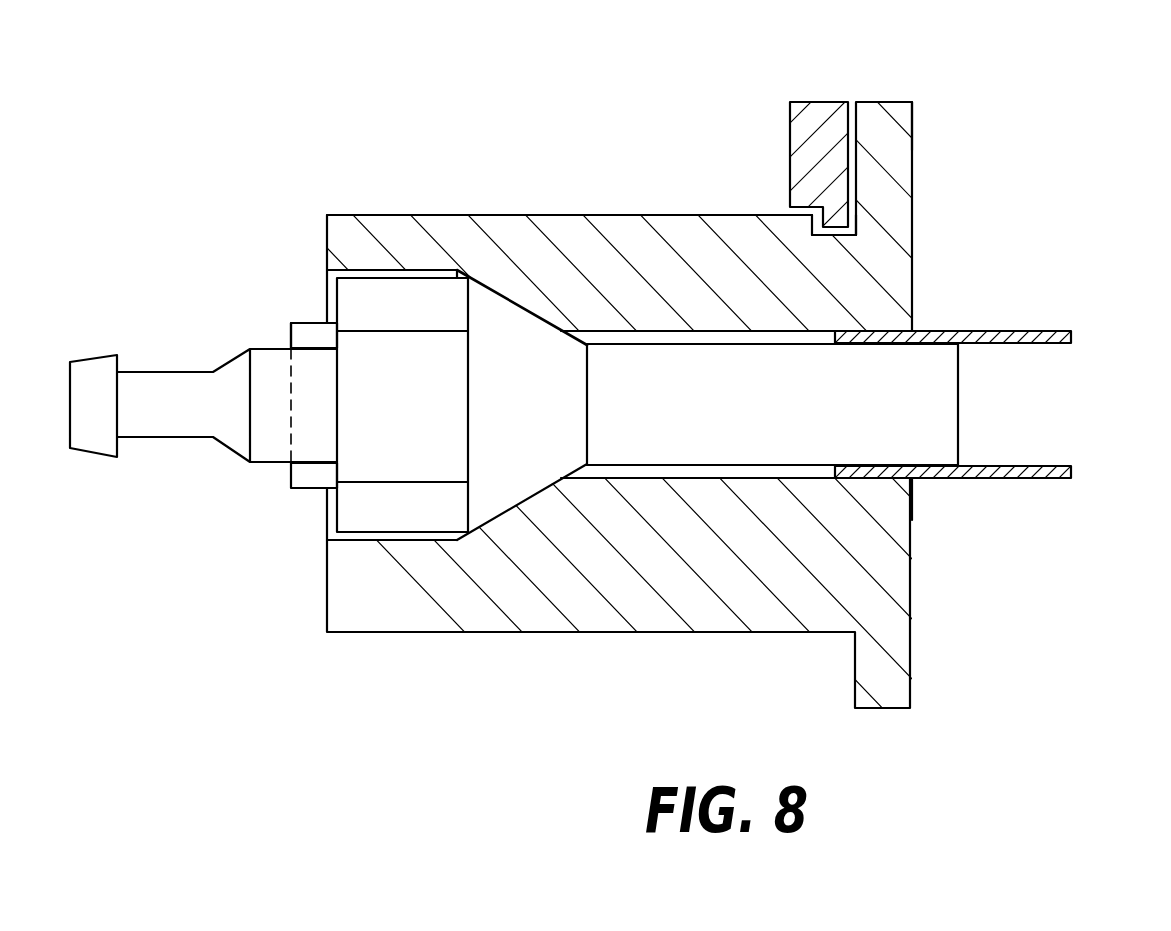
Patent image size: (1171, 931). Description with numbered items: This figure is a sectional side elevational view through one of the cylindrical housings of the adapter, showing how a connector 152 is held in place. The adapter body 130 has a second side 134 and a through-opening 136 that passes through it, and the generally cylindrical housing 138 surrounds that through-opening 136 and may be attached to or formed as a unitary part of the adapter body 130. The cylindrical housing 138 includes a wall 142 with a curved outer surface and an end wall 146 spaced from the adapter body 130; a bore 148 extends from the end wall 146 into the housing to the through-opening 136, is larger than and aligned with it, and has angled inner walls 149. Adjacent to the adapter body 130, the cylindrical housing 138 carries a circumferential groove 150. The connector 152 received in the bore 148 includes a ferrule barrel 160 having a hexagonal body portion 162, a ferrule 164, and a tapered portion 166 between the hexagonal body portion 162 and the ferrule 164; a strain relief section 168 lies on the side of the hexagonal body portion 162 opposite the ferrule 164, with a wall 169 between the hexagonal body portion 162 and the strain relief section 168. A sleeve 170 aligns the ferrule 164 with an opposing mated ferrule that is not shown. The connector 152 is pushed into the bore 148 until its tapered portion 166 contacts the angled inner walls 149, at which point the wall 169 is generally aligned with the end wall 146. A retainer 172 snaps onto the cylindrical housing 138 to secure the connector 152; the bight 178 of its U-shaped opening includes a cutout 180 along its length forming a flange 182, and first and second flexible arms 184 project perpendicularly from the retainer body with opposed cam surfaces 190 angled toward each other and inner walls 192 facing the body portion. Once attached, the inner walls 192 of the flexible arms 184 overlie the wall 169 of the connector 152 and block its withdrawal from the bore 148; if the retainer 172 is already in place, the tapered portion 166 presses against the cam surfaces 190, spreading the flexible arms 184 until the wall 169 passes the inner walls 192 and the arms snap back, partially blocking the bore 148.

The adapter body 130 is at (877, 110).
The second side 134 is at (912, 116).
The through-opening 136 is at (905, 474).
The cylindrical housing 138 is at (563, 583).
The wall 142 is at (623, 215).
The end wall 146 is at (327, 237).
The bore 148 is at (327, 273).
The angled inner wall 149 is at (528, 303).
The circumferential groove 150 is at (850, 230).
The connector 152 is at (286, 298).
The ferrule barrel 160 is at (457, 521).
The hexagonal body portion 162 is at (372, 512).
The ferrule 164 is at (932, 330).
The tapered portion 166 is at (545, 440).
The strain relief section 168 is at (268, 356).
The wall 169 is at (325, 517).
The sleeve 170 is at (1023, 341).
The retainer 172 is at (817, 110).
The bight 178 is at (808, 210).
The cutout 180 is at (790, 213).
The flange 182 is at (840, 210).
The flexible arm 184 is at (338, 472).
The cam surface 190 is at (303, 332).
The inner wall 192 is at (330, 497).